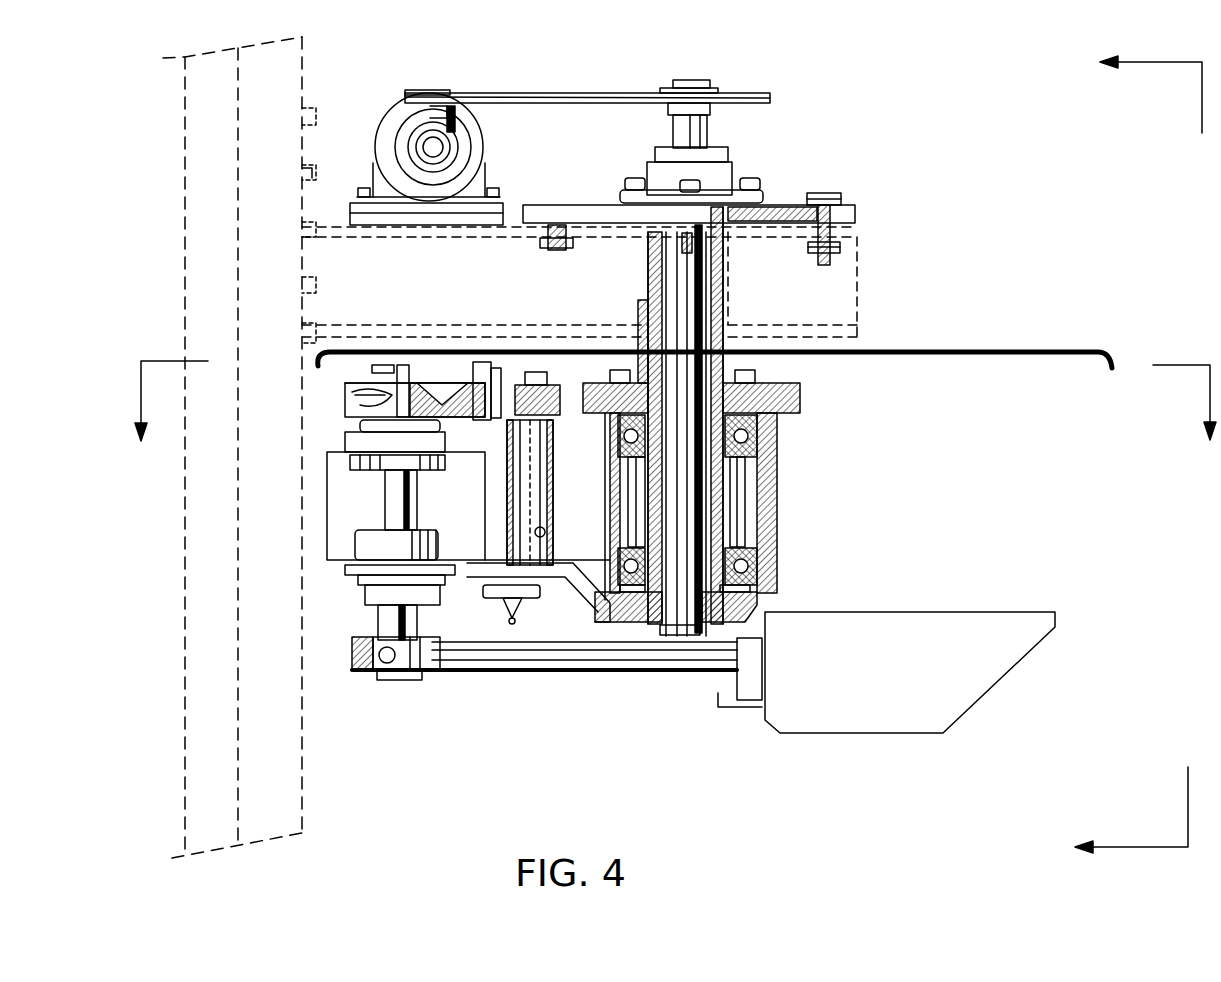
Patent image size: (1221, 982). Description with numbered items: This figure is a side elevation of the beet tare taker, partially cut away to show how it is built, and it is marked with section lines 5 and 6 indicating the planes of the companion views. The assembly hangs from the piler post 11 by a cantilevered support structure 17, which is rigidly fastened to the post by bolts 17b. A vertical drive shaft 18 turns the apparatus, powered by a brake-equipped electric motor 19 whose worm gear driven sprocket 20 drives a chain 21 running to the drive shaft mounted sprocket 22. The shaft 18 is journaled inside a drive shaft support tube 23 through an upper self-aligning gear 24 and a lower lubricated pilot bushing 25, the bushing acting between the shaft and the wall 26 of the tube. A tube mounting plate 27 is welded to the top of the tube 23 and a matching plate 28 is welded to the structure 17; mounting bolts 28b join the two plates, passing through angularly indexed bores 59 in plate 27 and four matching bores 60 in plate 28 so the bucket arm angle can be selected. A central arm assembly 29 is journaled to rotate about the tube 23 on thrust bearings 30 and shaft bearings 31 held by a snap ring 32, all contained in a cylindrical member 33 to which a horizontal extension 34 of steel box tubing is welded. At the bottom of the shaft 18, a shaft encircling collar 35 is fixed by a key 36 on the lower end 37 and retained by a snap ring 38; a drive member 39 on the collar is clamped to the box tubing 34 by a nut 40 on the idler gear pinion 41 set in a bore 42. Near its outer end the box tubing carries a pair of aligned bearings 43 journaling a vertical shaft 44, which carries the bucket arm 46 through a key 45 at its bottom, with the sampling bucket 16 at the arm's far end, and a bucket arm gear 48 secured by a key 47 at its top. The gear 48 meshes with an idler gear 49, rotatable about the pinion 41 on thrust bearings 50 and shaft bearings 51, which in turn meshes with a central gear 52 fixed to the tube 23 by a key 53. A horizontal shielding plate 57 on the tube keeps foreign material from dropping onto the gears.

The section line 5- 5 is at (1145, 454).
The section line 6- 6 is at (156, 401).
The post 11 is at (185, 277).
The sampling bucket 16 is at (955, 712).
The cantilevered structure 17 is at (843, 303).
The bolts 17b is at (312, 172).
The vertical shaft 18 is at (693, 135).
The electric motor 19 is at (390, 120).
The worm gear driven sprocket 20 is at (455, 92).
The chain 21 is at (548, 94).
The drive shaft mounted sprocket 22 is at (735, 95).
The drive shaft support tube 23 is at (728, 305).
The upper self-aligning gear 24 is at (735, 164).
The lower lubricated pilot bushing 25 is at (745, 553).
The wall 26 is at (765, 520).
The tube mounting plate 27 is at (590, 205).
The matching plate 28 is at (513, 226).
The mounting bolts 28b is at (828, 193).
The central arm assembly 29 is at (320, 490).
The thrust bearings 30 is at (758, 446).
The shaft bearings 31 is at (748, 468).
The snap ring 32 is at (765, 590).
The cylindrical member 33 is at (752, 546).
The horizontal extension 34 is at (345, 527).
The shaft encircling collar 35 is at (745, 606).
The key 36 is at (706, 675).
The lower end 37 is at (676, 675).
The snap ring 38 is at (642, 675).
The drive member 39 is at (585, 580).
The nut 40 is at (490, 603).
The idler gear pinion 41 is at (522, 484).
The bore 42 is at (545, 532).
The bearings 43 is at (353, 462).
The vertical shaft 44 is at (387, 612).
The key 45 is at (385, 683).
The bucket arm 46 is at (540, 672).
The key 47 is at (372, 376).
The bucket arm gear 48 is at (355, 413).
The idler gear 49 is at (460, 350).
The thrust bearings 50 is at (560, 350).
The shaft bearings 51 is at (478, 350).
The central gear 52 is at (770, 395).
The key 53 is at (645, 335).
The horizontal shielding plate 57 is at (352, 350).
The bores 59 is at (845, 232).
The matching bores 60 is at (842, 212).